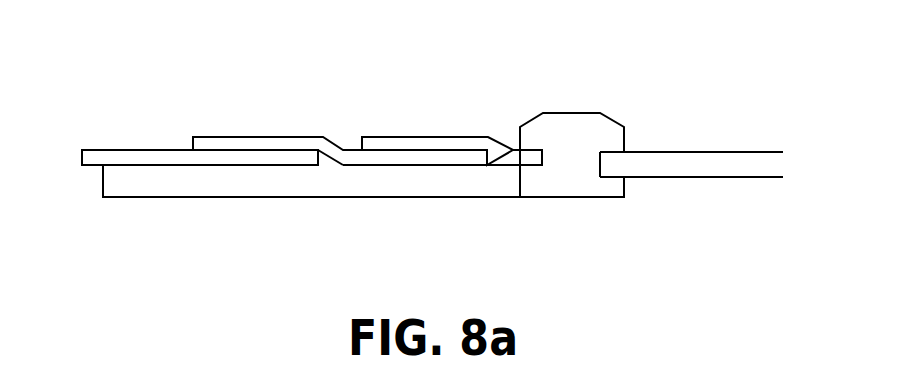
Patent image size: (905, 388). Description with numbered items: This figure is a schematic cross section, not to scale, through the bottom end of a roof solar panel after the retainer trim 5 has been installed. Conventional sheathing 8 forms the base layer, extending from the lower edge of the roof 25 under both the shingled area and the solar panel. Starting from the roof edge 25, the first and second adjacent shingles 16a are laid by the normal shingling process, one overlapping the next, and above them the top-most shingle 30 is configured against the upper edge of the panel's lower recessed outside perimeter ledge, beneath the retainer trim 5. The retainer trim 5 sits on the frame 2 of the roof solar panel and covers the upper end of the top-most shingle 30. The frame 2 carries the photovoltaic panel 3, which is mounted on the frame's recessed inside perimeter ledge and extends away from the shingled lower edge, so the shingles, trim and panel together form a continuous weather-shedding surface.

The adjacent shingles 16a is at (253, 137).
The top-most shingle 30 is at (430, 137).
The retainer trim 5 is at (572, 113).
The frame 2 is at (573, 198).
The photovoltaic panel 3 is at (717, 177).
The sheathing 8 is at (315, 198).
The lower edge of the roof 25 is at (102, 180).